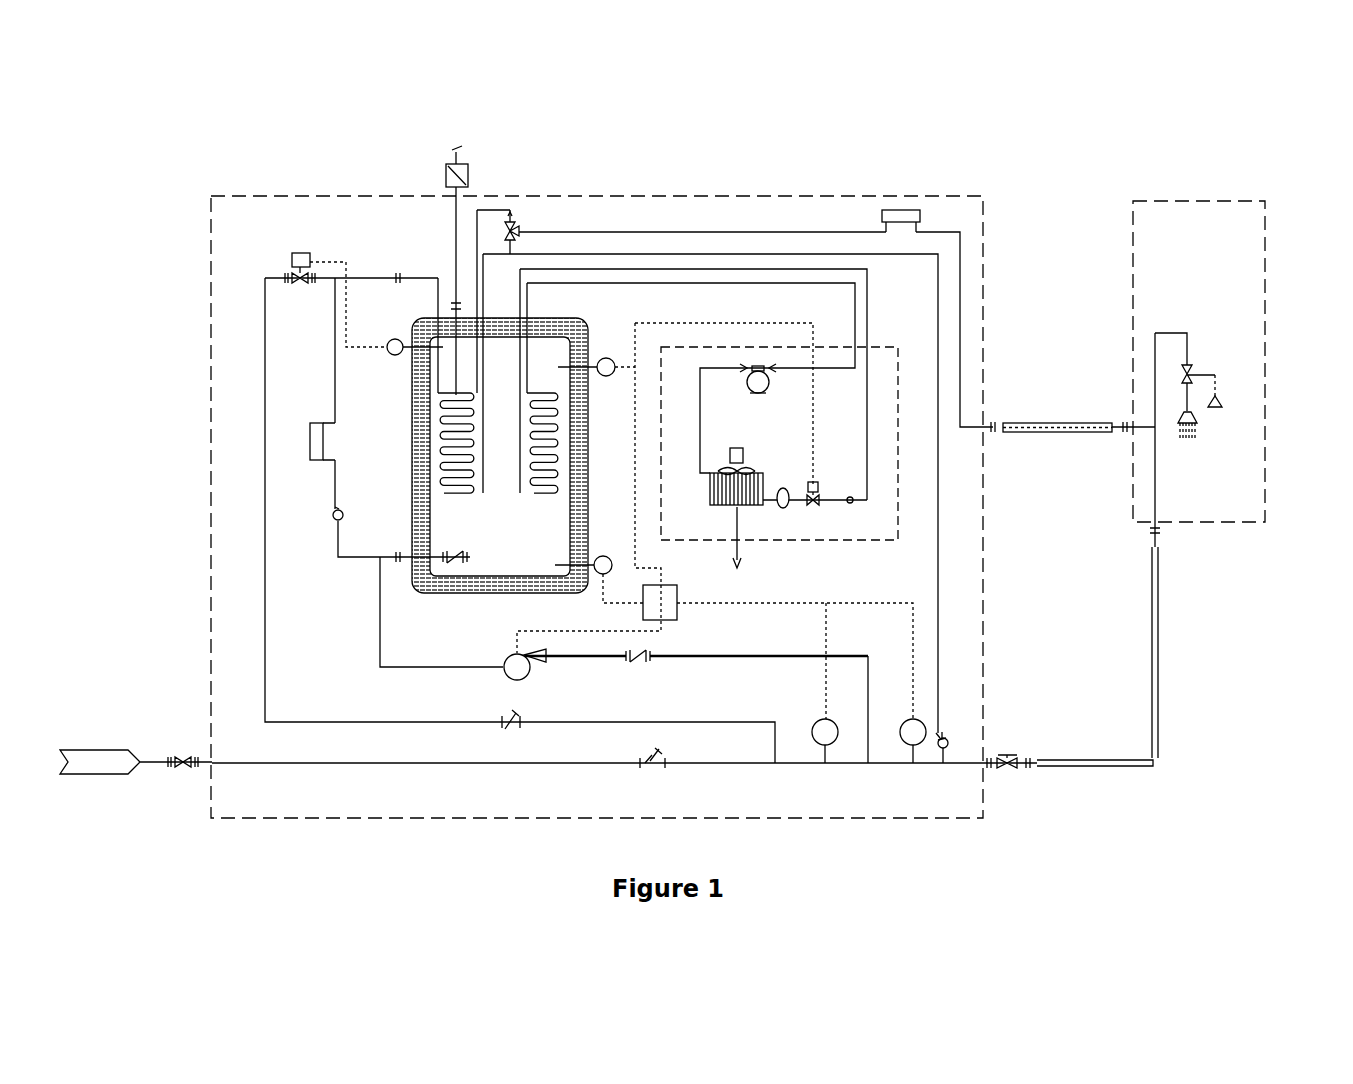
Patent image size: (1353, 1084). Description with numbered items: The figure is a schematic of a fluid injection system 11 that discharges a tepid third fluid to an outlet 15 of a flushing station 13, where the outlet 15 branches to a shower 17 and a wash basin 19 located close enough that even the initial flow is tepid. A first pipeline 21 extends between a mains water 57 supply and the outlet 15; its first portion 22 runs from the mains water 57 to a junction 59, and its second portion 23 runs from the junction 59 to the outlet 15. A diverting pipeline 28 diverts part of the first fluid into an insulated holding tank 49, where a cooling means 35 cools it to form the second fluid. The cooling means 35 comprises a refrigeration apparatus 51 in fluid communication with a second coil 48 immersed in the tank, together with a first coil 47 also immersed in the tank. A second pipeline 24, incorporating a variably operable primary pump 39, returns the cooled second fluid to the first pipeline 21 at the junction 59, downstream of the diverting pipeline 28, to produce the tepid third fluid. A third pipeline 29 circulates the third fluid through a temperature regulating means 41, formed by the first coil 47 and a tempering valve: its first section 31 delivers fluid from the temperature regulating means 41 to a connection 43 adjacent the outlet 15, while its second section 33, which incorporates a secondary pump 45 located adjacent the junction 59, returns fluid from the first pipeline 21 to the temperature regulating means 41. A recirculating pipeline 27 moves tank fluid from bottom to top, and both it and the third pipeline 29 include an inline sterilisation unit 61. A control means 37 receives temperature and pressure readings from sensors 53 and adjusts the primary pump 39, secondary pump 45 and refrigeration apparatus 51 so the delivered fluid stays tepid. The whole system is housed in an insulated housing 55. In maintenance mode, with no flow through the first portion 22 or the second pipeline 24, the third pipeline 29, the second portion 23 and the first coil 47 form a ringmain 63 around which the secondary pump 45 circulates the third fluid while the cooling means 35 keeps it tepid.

The fluid injection system 11 is at (806, 133).
The flushing station 13 is at (1265, 317).
The outlet 15 is at (1189, 370).
The shower 17 is at (1190, 430).
The wash basin 19 is at (1217, 403).
The first pipeline 21 is at (393, 764).
The first portion 22 is at (493, 764).
The second portion 23 is at (1160, 692).
The second pipeline 24 is at (863, 712).
The recirculating pipeline 27 is at (330, 495).
The diverting pipeline 28 is at (265, 475).
The third pipeline 29 is at (962, 277).
The first section 31 is at (1055, 425).
The second section 33 is at (940, 573).
The cooling means 35 is at (700, 367).
The control means 37 is at (652, 606).
The primary pump 39 is at (518, 672).
The temperature regulating means 41 is at (453, 417).
The connection 43 is at (1153, 433).
The secondary pump 45 is at (955, 747).
The first coil 47 is at (462, 396).
The second coil 48 is at (533, 423).
The insulated holding tank 49 is at (418, 512).
The refrigeration apparatus 51 is at (735, 363).
The sensors 53 is at (395, 339).
The insulated housing 55 is at (320, 192).
The mains water 57 is at (100, 760).
The junction 59 is at (870, 766).
The sterilisation unit 61 is at (313, 442).
The ringmain 63 is at (827, 254).